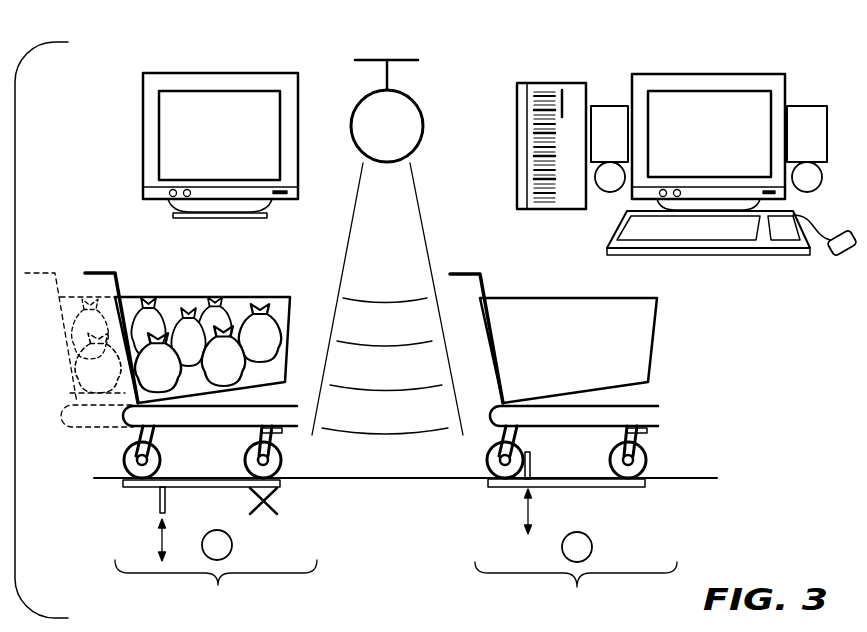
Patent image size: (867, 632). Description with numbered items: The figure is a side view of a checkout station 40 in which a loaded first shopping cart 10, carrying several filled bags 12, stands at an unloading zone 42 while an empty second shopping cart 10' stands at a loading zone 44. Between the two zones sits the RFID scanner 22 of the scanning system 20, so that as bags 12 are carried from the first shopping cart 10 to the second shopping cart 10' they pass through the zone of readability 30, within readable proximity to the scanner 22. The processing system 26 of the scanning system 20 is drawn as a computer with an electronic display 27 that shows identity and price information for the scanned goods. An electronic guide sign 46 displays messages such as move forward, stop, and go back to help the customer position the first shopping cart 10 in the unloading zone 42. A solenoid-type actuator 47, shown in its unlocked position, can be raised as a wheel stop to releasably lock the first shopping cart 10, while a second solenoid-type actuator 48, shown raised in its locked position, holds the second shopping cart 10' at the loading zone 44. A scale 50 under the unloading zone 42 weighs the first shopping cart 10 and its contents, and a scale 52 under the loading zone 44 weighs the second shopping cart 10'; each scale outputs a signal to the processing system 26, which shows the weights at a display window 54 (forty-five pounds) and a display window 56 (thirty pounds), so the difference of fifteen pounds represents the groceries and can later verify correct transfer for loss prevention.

The first shopping cart 10 is at (161, 375).
The second shopping cart 10' is at (600, 376).
The filled bags 12 is at (212, 299).
The scanning system 20 is at (346, 89).
The RFID scanner 22 is at (412, 117).
The processing system 26 is at (507, 152).
The electronic display 27 is at (733, 74).
The zone of readability 30 is at (422, 220).
The checkout station 40 is at (365, 509).
The unloading zone 42 is at (216, 588).
The loading zone 44 is at (576, 590).
The electronic guide sign 46 is at (143, 93).
The solenoid-type actuator 47 is at (160, 497).
The solenoid-type actuator 48 is at (531, 470).
The scale 50 is at (195, 478).
The scale 52 is at (572, 479).
The display window 54 is at (607, 106).
The display window 56 is at (802, 106).